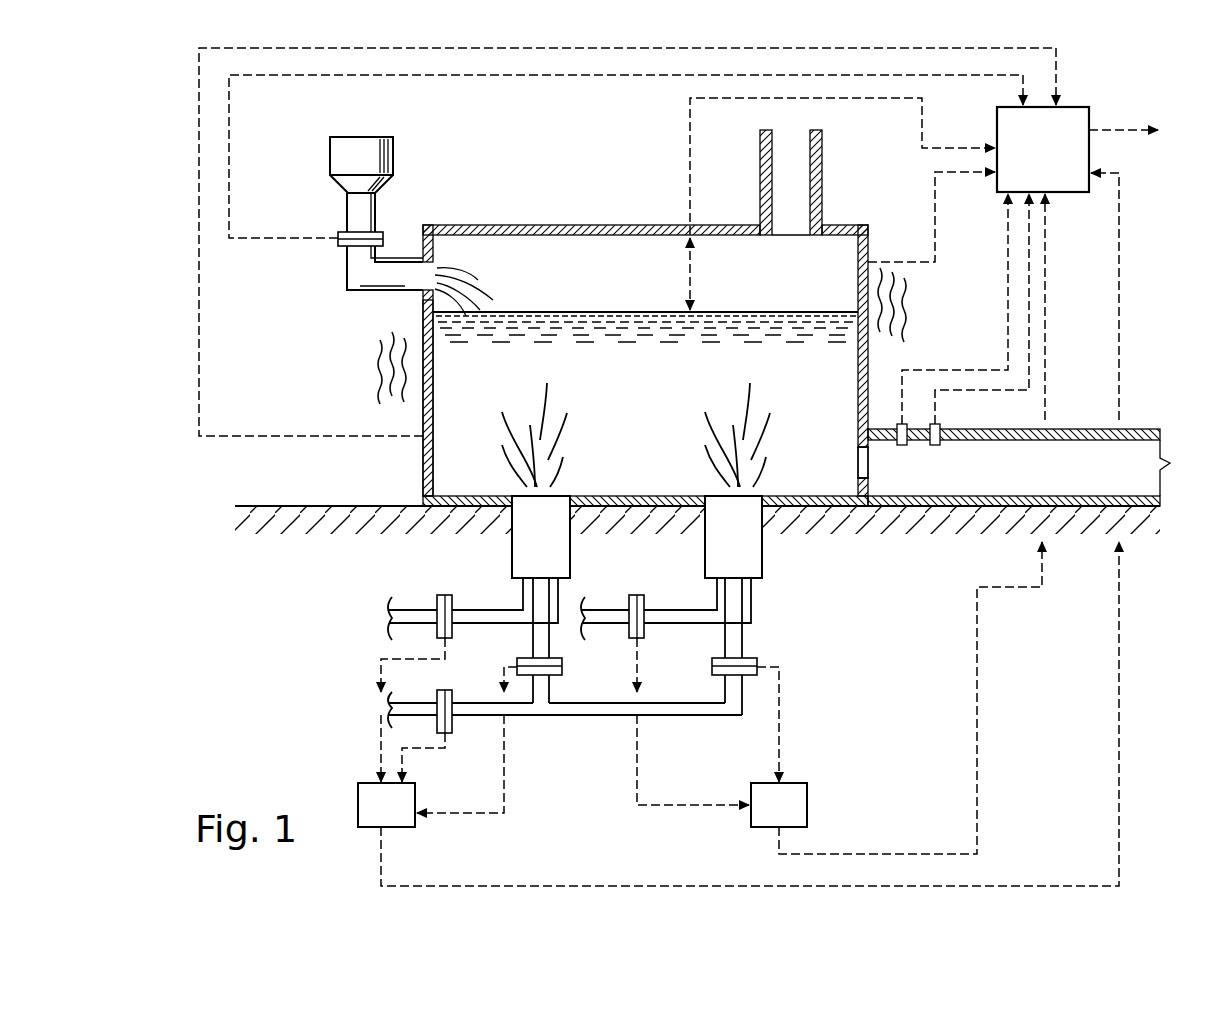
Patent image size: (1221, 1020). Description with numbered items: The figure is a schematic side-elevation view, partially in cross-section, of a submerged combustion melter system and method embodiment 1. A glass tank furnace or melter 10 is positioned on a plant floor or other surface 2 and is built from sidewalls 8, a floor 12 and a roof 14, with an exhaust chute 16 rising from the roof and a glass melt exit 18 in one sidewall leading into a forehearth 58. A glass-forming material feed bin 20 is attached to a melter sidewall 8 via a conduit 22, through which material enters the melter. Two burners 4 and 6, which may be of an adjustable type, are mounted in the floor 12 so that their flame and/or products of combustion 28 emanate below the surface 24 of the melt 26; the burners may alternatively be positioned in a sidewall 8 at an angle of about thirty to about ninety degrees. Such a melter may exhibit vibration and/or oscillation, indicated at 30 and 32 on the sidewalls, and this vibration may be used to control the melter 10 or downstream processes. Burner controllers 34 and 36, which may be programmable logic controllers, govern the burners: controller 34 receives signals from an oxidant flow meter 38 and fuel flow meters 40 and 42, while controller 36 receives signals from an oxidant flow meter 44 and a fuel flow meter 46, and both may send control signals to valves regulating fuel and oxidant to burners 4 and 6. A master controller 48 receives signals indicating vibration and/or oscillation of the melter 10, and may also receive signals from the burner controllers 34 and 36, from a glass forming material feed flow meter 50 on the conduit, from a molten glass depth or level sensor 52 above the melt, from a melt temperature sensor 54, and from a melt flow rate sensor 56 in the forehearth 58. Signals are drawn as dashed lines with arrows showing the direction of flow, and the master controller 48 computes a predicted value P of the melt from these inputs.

The submerged combustion melter system and method embodiment 1 is at (1107, 90).
The plant floor or other surface 2 is at (328, 528).
The burner 4 is at (570, 556).
The burner 6 is at (762, 556).
The sidewall 8 is at (423, 456).
The glass tank furnace or melter 10 is at (478, 226).
The floor 12 is at (468, 508).
The roof 14 is at (575, 226).
The exhaust chute 16 is at (822, 175).
The glass melt exit 18 is at (858, 461).
The glass-forming material feed bin 20 is at (330, 157).
The conduit 22 is at (365, 300).
The surface of melt 24 is at (560, 313).
The melt 26 is at (616, 389).
The flame and/or products of combustion 28 is at (574, 431).
The vibration and/or oscillation 30 is at (905, 285).
The vibration and/or oscillation 32 is at (378, 382).
The burner controller 34 is at (415, 797).
The burner controller 36 is at (807, 803).
The oxidant flow meter 38 is at (437, 597).
The fuel flow meter 40 is at (452, 688).
The fuel flow meter 42 is at (562, 665).
The oxidant flow meter 44 is at (635, 598).
The fuel flow meter 46 is at (757, 663).
The master controller 48 is at (1060, 163).
The glass forming material feed flow meter 50 is at (342, 248).
The molten glass depth or level sensor 52 is at (695, 226).
The melt temperature sensor 54 is at (902, 445).
The melt flow rate sensor 56 is at (940, 445).
The forehearth 58 is at (1085, 430).